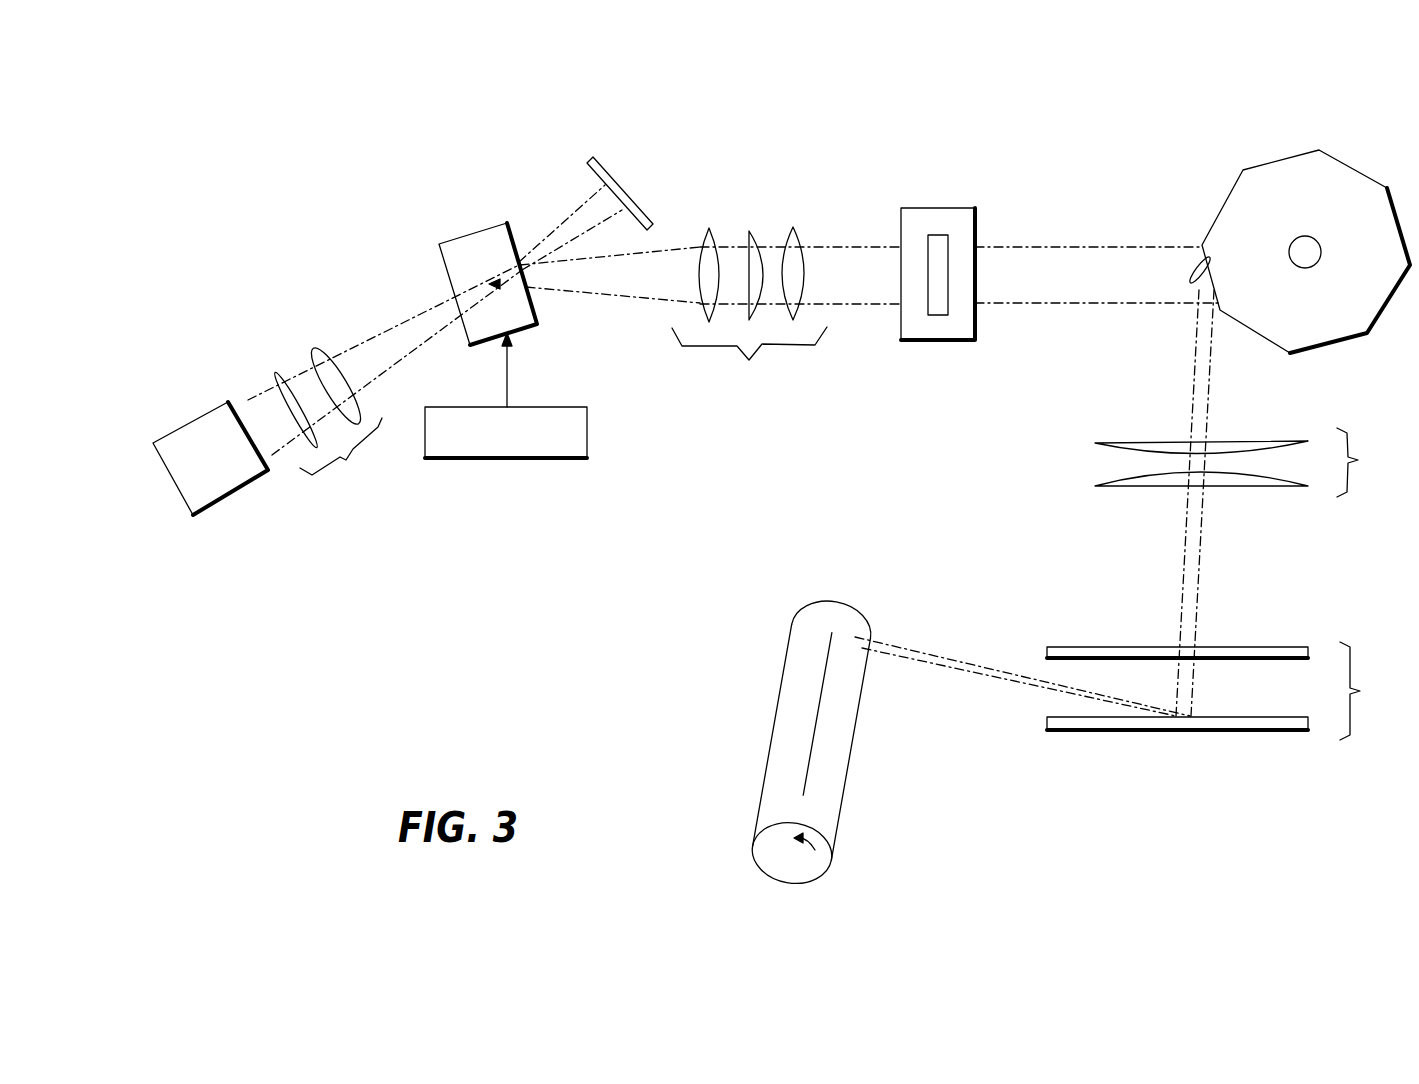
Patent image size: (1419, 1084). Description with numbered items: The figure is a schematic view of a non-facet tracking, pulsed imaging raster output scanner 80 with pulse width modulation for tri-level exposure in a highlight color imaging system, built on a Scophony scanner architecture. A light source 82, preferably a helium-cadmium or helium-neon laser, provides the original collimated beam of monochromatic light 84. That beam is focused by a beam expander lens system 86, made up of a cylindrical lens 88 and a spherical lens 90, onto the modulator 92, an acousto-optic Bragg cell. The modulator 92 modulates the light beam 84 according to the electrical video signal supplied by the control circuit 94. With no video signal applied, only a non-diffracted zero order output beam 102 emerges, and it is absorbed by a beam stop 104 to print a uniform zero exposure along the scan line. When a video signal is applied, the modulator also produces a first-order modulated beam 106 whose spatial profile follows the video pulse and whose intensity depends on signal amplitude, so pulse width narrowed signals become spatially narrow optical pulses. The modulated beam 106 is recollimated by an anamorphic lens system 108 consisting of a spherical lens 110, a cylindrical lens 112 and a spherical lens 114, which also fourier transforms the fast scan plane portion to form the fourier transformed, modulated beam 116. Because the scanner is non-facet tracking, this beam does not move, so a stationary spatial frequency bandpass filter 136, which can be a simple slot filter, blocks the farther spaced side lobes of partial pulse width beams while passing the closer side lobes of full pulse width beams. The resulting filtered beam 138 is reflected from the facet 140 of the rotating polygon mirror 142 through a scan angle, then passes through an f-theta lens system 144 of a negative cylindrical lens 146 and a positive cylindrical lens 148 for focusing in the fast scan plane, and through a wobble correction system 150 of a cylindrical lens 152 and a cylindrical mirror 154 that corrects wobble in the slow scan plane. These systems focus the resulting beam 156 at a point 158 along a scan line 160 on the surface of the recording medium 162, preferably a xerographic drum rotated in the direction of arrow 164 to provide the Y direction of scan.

The raster output scanner 80 is at (287, 243).
The light source 82 is at (222, 483).
The beam of light 84 is at (252, 404).
The beam expander lens system 86 is at (341, 453).
The cylindrical lens 88 is at (275, 373).
The spherical lens 90 is at (315, 348).
The modulator 92 is at (468, 242).
The control circuit 94 is at (565, 450).
The zero order output beam 102 is at (558, 225).
The beam stop 104 is at (613, 190).
The modulated beam 106 is at (628, 300).
The anamorphic lens system 108 is at (749, 359).
The spherical lens 110 is at (716, 230).
The cylindrical lens 112 is at (753, 230).
The spherical lens 114 is at (797, 230).
The fourier transformed, modulated beam 116 is at (857, 305).
The spatial frequency bandpass filter 136 is at (952, 213).
The filtered beam 138 is at (1080, 305).
The facet 140 is at (1205, 257).
The rotating polygon mirror 142 is at (1267, 172).
The f-theta lens system 144 is at (1371, 462).
The negative cylindrical lens 146 is at (1097, 443).
The positive cylindrical lens 148 is at (1097, 483).
The wobble correction system 150 is at (1375, 691).
The cylindrical lens 152 is at (1058, 648).
The cylindrical mirror 154 is at (1067, 725).
The resulting beam 156 is at (967, 660).
The point 158 is at (807, 623).
The scan line 160 is at (820, 697).
The recording medium 162 is at (803, 865).
The arrow 164 is at (817, 848).